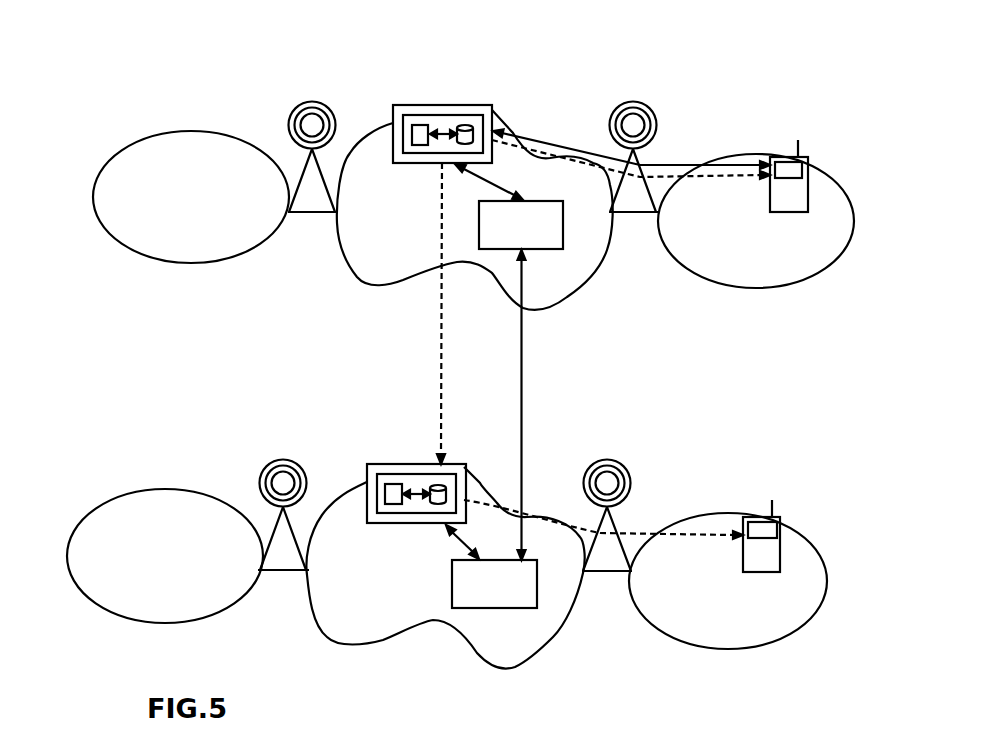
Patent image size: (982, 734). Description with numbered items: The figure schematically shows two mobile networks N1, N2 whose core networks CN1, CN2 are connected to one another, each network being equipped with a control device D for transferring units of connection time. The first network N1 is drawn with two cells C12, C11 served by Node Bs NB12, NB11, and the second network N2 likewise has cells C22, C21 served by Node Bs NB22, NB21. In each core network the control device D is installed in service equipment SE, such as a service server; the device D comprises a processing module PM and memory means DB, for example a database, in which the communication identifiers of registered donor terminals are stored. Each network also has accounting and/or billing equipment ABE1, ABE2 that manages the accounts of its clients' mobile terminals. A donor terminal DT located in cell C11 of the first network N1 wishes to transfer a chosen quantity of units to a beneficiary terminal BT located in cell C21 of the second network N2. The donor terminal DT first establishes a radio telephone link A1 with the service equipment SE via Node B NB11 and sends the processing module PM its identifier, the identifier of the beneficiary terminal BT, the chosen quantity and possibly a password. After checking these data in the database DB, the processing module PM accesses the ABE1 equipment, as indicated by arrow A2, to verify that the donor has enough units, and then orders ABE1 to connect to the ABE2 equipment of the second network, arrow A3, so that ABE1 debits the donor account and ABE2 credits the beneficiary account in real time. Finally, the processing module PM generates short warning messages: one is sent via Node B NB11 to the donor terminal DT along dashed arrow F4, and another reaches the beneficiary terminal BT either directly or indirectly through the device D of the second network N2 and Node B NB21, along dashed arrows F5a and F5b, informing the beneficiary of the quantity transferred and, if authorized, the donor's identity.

The first mobile network N1 is at (165, 77).
The second mobile network N2 is at (150, 435).
The cell of first network C12 is at (127, 145).
The cell of the first network C11 is at (783, 288).
The cell of second network C22 is at (100, 505).
The cell of the second network C21 is at (755, 648).
The base station node B NB12 is at (313, 101).
The Node B NB11 is at (648, 105).
The base station node B NB22 is at (283, 459).
The Node B NB21 is at (622, 465).
The core network CN1 is at (337, 250).
The core network CN2 is at (343, 648).
The service equipment SE is at (393, 121).
The processing module PM is at (418, 123).
The memory means DB is at (462, 125).
The control device D is at (417, 164).
The accounting and/or billing equipment ABE1 is at (538, 250).
The accounting and/or billing equipment ABE2 is at (512, 608).
The radio telephone link A1 is at (563, 143).
The access link to ABE1 A2 is at (480, 178).
The link between ABE1 and ABE2 A3 is at (522, 407).
The warning message to donor terminal F4 is at (716, 178).
The warning message to beneficiary terminal F5a is at (440, 340).
The warning message to beneficiary terminal F5b is at (683, 537).
The donor terminal DT is at (810, 165).
The beneficiary terminal BT is at (785, 530).